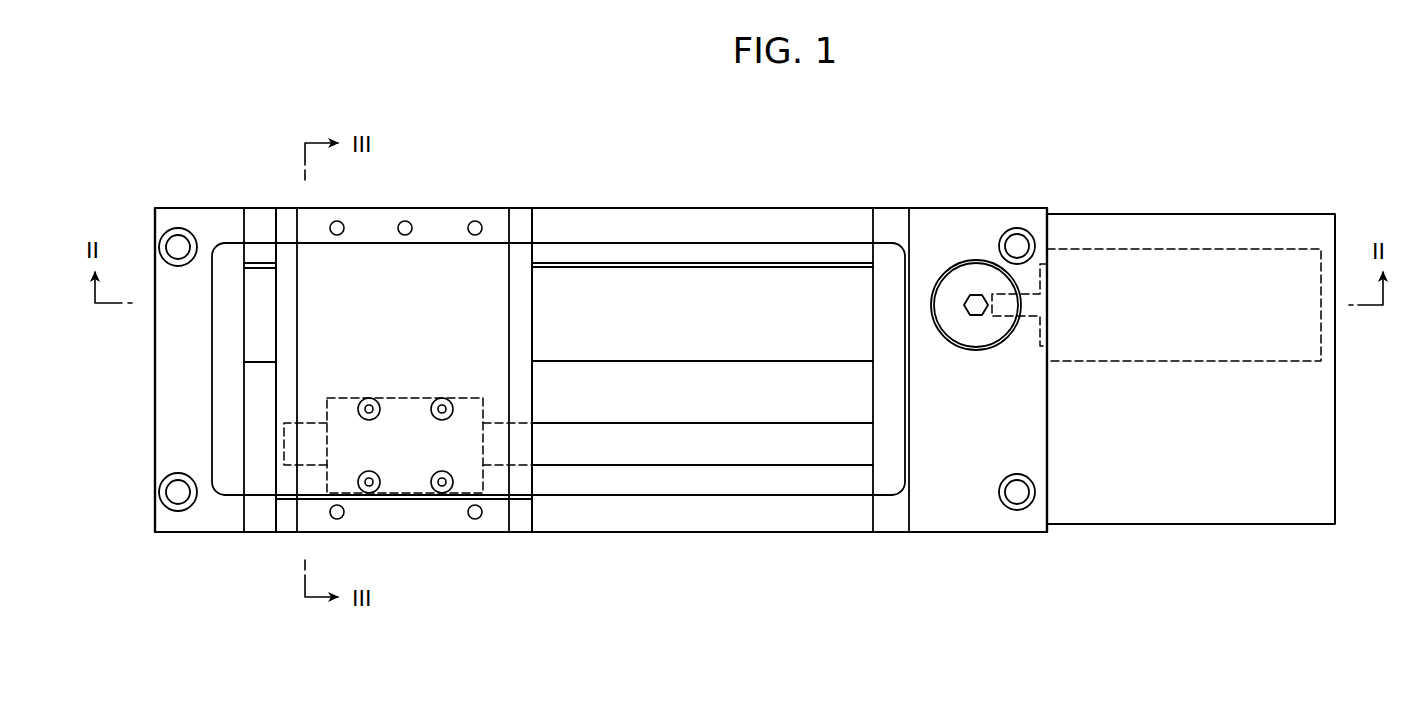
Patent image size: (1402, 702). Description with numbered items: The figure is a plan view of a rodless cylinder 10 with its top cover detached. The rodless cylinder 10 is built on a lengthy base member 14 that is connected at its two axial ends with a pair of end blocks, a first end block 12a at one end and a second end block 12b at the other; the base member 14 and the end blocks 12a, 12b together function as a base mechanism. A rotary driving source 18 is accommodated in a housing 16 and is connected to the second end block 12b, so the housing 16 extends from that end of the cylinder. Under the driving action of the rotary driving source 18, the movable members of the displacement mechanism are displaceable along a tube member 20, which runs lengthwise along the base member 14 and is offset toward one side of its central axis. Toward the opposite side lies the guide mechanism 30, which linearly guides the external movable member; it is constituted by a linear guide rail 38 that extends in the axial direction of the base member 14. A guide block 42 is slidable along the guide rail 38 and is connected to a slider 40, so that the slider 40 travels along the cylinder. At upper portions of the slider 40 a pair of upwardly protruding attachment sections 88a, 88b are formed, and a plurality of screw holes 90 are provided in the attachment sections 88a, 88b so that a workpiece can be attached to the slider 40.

The rodless cylinder 10 is at (1069, 107).
The first end block 12a is at (213, 505).
The second end block 12b is at (958, 488).
The base member 14 is at (719, 204).
The housing 16 is at (1200, 213).
The rotary driving source 18 is at (1284, 248).
The tube member 20 is at (667, 307).
The guide mechanism 30 is at (751, 446).
The linear guide rail 38 is at (633, 448).
The slider 40 is at (409, 279).
The guide block 42 is at (398, 396).
The first attachment section 88a is at (392, 218).
The second attachment section 88b is at (420, 520).
The screw holes 90 is at (334, 222).